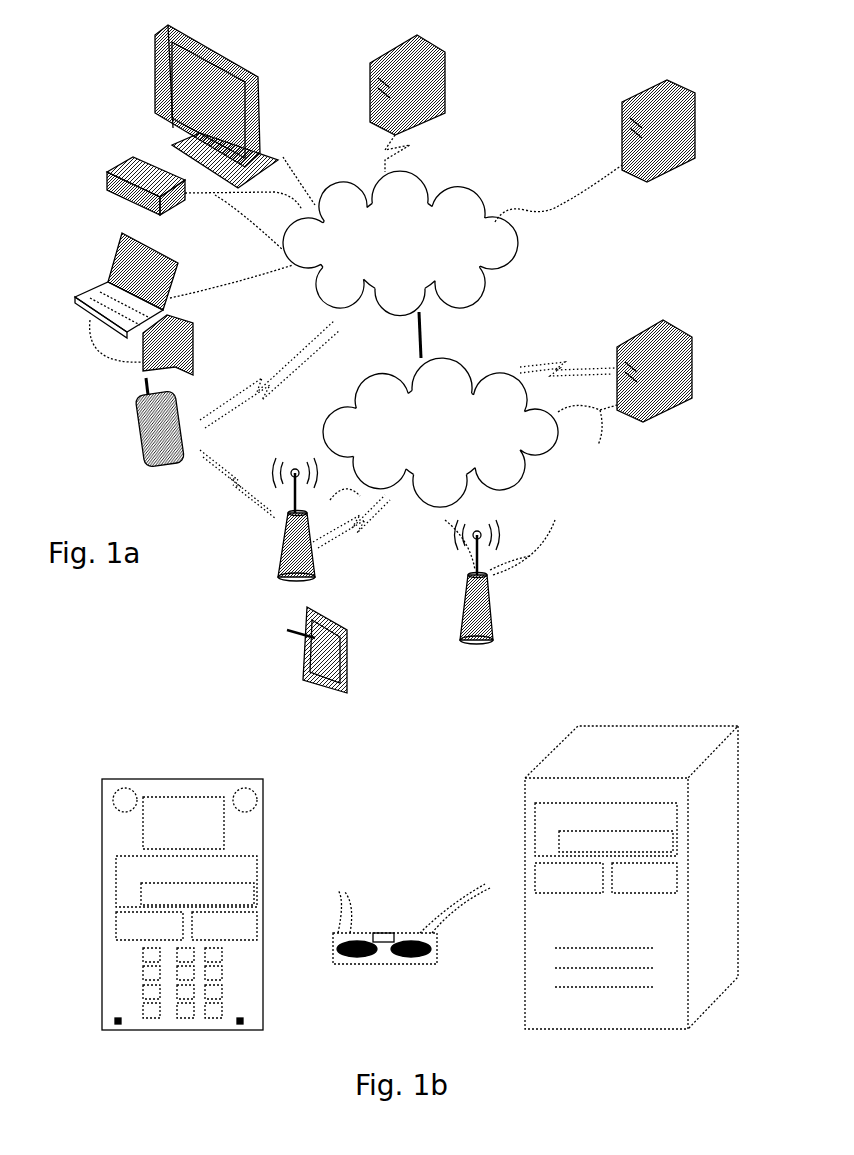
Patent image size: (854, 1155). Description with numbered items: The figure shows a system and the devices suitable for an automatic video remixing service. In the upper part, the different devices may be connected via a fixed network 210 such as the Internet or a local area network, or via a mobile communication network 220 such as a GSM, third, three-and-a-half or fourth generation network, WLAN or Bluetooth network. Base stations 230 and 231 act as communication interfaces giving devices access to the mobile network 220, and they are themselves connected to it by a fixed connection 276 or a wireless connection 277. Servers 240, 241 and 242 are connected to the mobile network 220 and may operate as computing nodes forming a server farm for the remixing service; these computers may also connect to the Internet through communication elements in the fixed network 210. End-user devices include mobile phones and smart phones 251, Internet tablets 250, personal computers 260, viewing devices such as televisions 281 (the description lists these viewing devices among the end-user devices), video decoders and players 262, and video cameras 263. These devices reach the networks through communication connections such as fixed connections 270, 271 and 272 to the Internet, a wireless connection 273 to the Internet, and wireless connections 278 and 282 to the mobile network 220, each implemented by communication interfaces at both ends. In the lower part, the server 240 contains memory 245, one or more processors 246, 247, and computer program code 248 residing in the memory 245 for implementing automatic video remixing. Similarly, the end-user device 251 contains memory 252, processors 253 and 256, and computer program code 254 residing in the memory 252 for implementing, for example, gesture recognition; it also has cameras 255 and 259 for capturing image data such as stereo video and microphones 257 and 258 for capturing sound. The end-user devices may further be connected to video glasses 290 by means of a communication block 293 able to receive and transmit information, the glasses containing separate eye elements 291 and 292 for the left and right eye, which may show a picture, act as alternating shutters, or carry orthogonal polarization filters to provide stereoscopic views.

In FIG. 1A, the desktop computer monitor 281 is at (146, 91).
In FIG. 1A, the video decoders and players 262 is at (120, 164).
In FIG. 1A, the personal computers 260 is at (108, 261).
In FIG. 1A, the video cameras 263 is at (193, 321).
In FIG. 1A, the mobile phones and smart phones 251 is at (140, 429).
In FIG. 1B, the mobile phones and smart phones 251 is at (189, 880).
In FIG. 1A, the wireless connection 273 is at (257, 383).
In FIG. 1A, the fixed connection 270 is at (246, 268).
In FIG. 1A, the server 240 is at (448, 62).
In FIG. 1B, the server 240 is at (625, 853).
In FIG. 1A, the fixed connection 271 is at (380, 157).
In FIG. 1A, the server 241 is at (700, 109).
In FIG. 1A, the fixed connection 272 is at (555, 194).
In FIG. 1A, the fixed network 210 is at (505, 284).
In FIG. 1A, the video glasses 290 is at (423, 349).
In FIG. 1B, the video glasses 290 is at (411, 909).
In FIG. 1A, the mobile communication network 220 is at (512, 489).
In FIG. 1A, the wireless connection 282 is at (532, 360).
In FIG. 1A, the server 242 is at (697, 354).
In FIG. 1A, the fixed connection 276 is at (415, 652).
In FIG. 1A, the wireless connection 277 is at (348, 537).
In FIG. 1A, the wireless connection 278 is at (232, 464).
In FIG. 1A, the base station 230 is at (280, 569).
In FIG. 1A, the base station 231 is at (495, 599).
In FIG. 1A, the Internet access devices 250 is at (303, 669).
In FIG. 1B, the memory 252 is at (116, 856).
In FIG. 1B, the processor 253 is at (116, 927).
In FIG. 1B, the computer program code 254 is at (256, 895).
In FIG. 1B, the camera 255 is at (125, 788).
In FIG. 1B, the processor 256 is at (260, 927).
In FIG. 1B, the microphone 257 is at (243, 1018).
In FIG. 1B, the microphone 258 is at (115, 1018).
In FIG. 1B, the camera 259 is at (245, 788).
In FIG. 1B, the eye element 291 is at (352, 965).
In FIG. 1B, the eye element 292 is at (412, 965).
In FIG. 1B, the communication block 293 is at (385, 932).
In FIG. 1B, the memory 245 is at (535, 847).
In FIG. 1B, the processor 246 is at (535, 881).
In FIG. 1B, the processor 247 is at (680, 879).
In FIG. 1B, the computer program code 248 is at (675, 839).